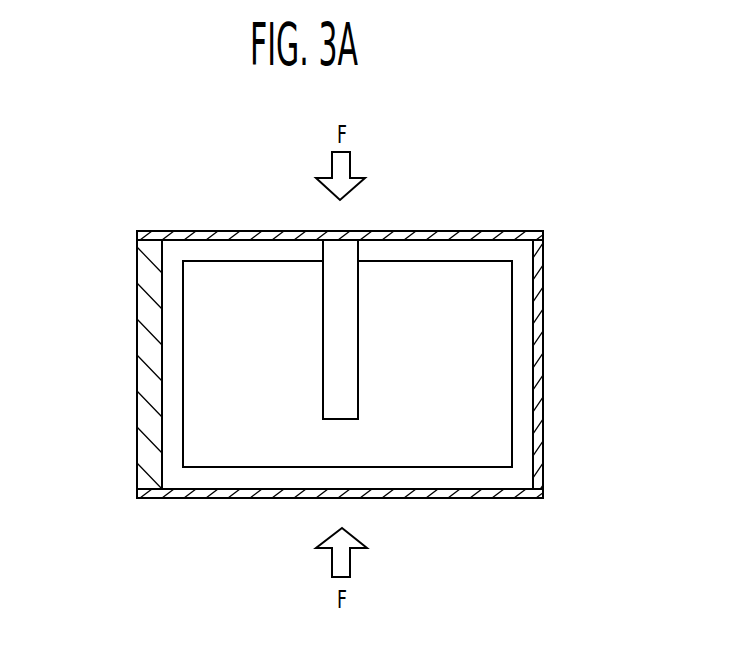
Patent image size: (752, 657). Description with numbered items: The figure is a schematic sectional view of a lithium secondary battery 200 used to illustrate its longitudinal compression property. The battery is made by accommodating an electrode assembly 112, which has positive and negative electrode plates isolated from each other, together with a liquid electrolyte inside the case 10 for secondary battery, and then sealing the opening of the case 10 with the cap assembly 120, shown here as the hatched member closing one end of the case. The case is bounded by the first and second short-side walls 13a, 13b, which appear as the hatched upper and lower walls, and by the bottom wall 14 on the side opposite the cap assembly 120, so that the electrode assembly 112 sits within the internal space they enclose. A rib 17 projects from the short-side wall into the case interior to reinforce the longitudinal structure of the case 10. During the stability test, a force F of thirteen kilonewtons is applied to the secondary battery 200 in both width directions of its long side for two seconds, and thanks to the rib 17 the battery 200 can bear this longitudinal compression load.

The lithium secondary battery 200 is at (100, 195).
The case for secondary battery 10 is at (470, 222).
The first short-side wall 13a is at (187, 231).
The second short-side wall 13b is at (233, 497).
The bottom wall 14 is at (542, 378).
The cap assembly 120 is at (150, 379).
The electrode assembly 112 is at (503, 310).
The rib 17 is at (345, 259).